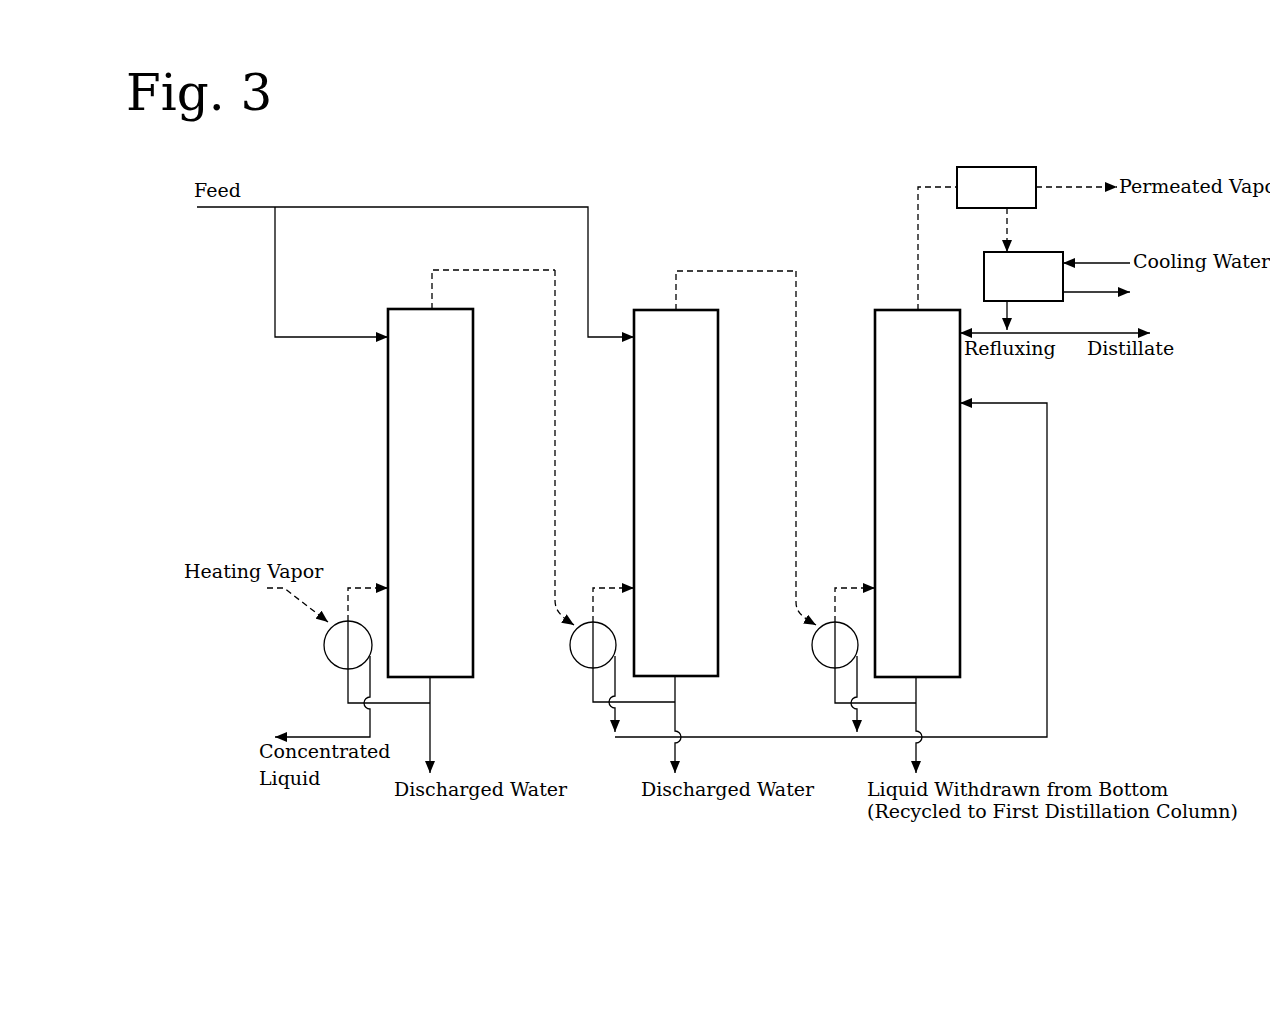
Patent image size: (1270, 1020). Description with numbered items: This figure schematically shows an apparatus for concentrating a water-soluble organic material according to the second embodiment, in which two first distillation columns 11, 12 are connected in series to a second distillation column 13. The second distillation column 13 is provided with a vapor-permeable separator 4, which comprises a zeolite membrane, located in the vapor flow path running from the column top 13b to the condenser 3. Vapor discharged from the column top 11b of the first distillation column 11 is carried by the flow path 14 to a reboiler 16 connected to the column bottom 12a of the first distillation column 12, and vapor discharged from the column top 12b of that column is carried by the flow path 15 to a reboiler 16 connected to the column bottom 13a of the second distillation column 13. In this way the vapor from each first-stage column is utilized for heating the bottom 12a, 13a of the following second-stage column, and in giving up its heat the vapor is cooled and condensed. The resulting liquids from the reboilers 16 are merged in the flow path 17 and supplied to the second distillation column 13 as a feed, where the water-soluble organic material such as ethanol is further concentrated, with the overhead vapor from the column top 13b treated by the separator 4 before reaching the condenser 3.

The condenser 3 is at (1035, 252).
The vapor-permeable separator 4 is at (1017, 167).
The first distillation column 11 is at (388, 452).
The column top 11b is at (454, 309).
The first distillation column 12 is at (718, 410).
The column bottom 12a is at (694, 676).
The column top 12b is at (694, 310).
The second distillation column 13 is at (960, 509).
The column bottom 13a is at (935, 677).
The column top 13b is at (893, 310).
The flow path 14 is at (555, 441).
The flow path 15 is at (796, 484).
The reboiler 16 is at (575, 659).
The flow path 17 is at (1047, 606).